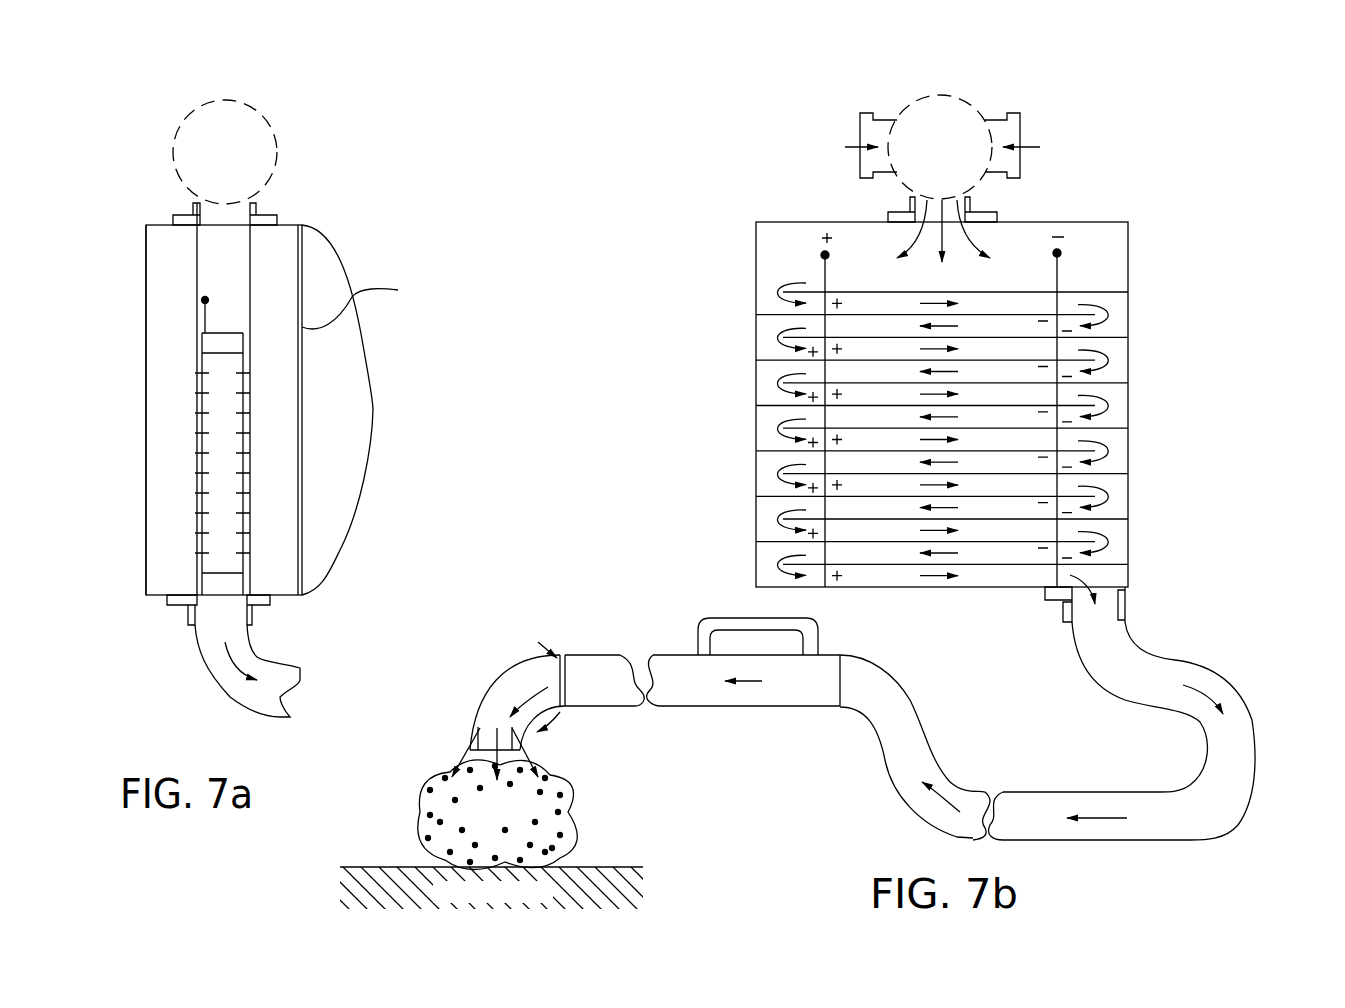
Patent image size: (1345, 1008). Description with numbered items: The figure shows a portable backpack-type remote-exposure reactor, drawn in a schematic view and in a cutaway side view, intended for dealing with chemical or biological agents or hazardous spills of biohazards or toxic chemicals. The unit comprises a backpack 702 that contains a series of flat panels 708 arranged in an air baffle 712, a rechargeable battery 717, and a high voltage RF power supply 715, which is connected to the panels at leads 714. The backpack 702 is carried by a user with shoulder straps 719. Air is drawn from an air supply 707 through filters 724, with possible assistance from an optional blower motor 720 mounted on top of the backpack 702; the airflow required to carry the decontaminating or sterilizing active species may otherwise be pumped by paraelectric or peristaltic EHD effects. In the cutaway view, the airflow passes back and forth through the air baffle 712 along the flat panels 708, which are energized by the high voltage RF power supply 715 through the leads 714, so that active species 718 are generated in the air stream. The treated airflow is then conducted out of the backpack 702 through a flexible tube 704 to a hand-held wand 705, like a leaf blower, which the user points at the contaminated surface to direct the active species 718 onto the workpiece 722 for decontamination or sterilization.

In FIG. 7a, the blower motor 720 is at (280, 160).
In FIG. 7b, the blower motor 720 is at (962, 102).
In FIG. 7a, the backpack 702 is at (360, 252).
In FIG. 7b, the backpack 702 is at (1140, 338).
In FIG. 7a, the high voltage RF power supply 715 is at (146, 334).
In FIG. 7a, the rechargeable battery 717 is at (371, 302).
In FIG. 7a, the shoulder straps 719 is at (377, 383).
In FIG. 7a, the flexible tube 704 is at (260, 647).
In FIG. 7b, the flexible tube 704 is at (1190, 840).
In FIG. 7b, the filters 724 is at (858, 115).
In FIG. 7b, the air supply 707 is at (1100, 145).
In FIG. 7b, the leads 714 is at (1050, 250).
In FIG. 7b, the air baffle 712 is at (953, 421).
In FIG. 7b, the flat panels 708 is at (752, 490).
In FIG. 7b, the hand-held wand 705 is at (746, 709).
In FIG. 7b, the active species 718 is at (567, 812).
In FIG. 7b, the workpiece 722 is at (597, 887).